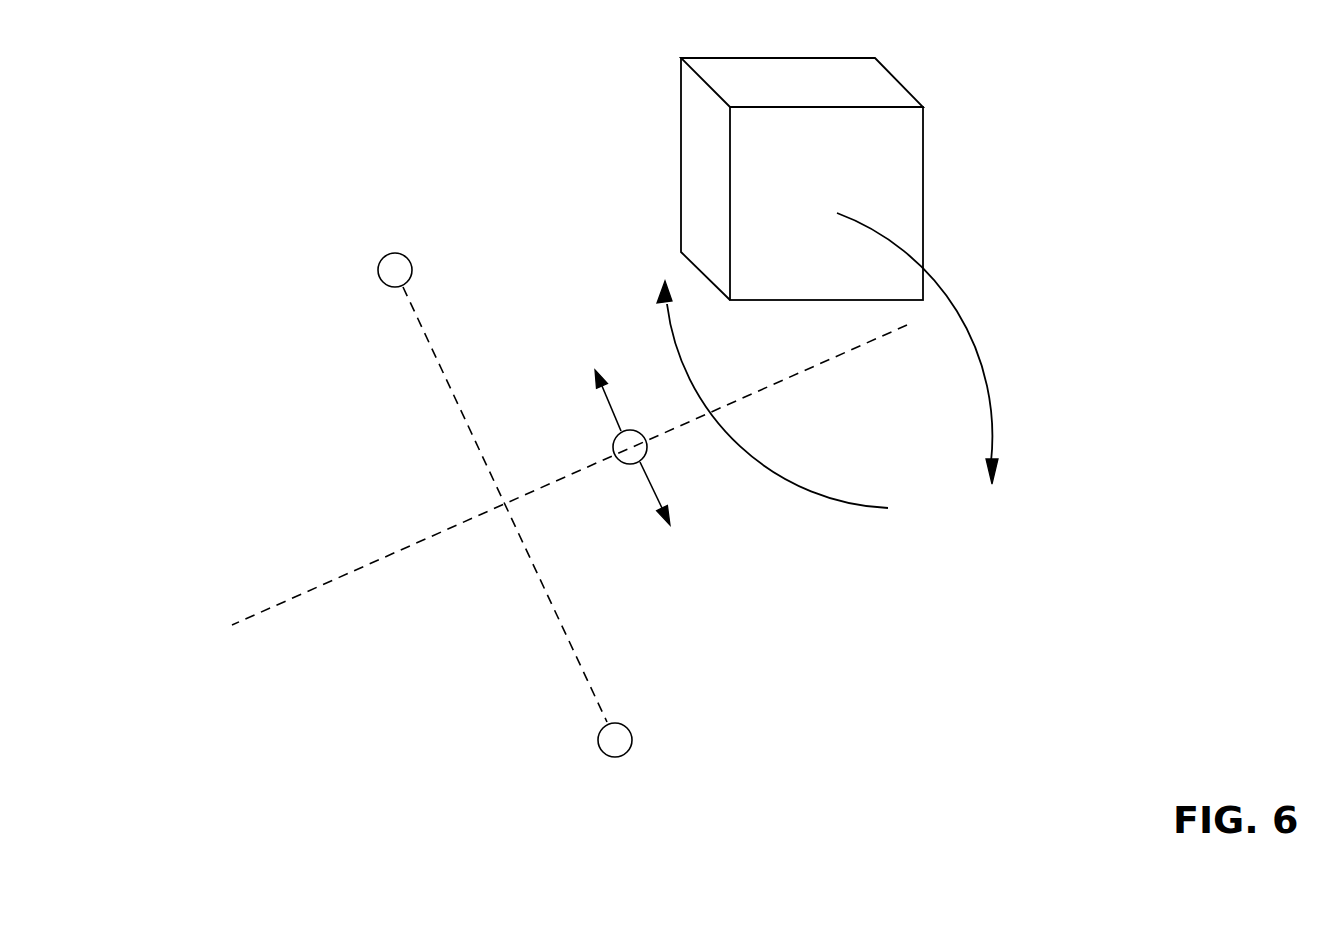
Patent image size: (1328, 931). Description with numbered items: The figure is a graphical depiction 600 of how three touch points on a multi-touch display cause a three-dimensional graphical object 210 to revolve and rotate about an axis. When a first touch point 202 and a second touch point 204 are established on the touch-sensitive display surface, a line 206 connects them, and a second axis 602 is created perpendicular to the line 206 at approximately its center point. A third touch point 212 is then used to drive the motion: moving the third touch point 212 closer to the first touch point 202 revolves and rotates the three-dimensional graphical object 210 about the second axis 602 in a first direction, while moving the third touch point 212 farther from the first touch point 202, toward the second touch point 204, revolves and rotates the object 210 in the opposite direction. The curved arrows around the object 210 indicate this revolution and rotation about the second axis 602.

The three-dimensional graphical object 210 is at (803, 56).
The graphical depiction 600 is at (1080, 101).
The second axis 602 is at (788, 378).
The line 206 is at (562, 623).
The first touch point 202 is at (412, 262).
The second touch point 204 is at (628, 723).
The third touch point 212 is at (628, 463).